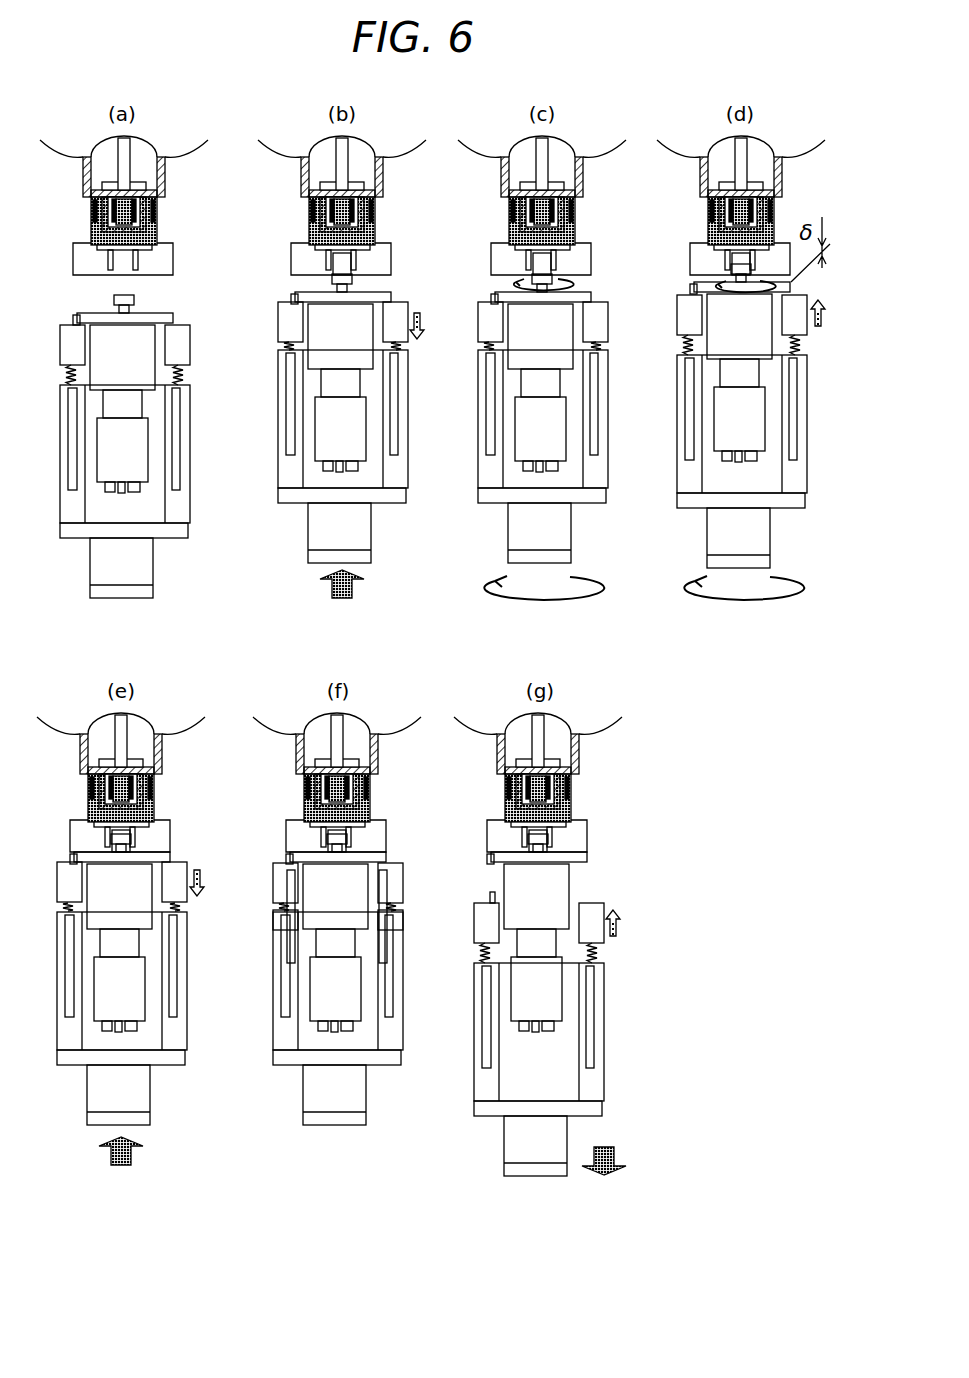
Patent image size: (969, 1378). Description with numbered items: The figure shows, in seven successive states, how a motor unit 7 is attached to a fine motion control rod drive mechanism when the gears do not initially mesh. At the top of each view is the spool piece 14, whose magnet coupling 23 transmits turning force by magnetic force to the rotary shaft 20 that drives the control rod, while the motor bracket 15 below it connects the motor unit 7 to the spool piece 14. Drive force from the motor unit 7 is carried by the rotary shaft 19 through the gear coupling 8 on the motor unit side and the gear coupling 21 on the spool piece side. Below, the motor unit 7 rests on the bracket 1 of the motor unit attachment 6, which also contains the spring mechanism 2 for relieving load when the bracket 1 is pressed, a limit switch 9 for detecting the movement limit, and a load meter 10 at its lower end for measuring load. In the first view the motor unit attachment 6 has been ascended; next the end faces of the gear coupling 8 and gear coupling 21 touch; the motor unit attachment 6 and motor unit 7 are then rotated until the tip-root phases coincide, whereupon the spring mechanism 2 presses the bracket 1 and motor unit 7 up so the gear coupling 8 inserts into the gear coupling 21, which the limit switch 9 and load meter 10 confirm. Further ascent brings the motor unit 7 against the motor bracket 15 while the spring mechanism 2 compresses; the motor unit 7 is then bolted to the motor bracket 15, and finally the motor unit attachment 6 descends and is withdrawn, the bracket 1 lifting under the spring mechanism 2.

The bracket 1 is at (62, 335).
The spring mechanism 2 is at (66, 378).
The motor unit attachment 6 is at (410, 733).
The motor unit 7 is at (392, 669).
The gear coupling on the motor unit side 8 is at (448, 563).
The limit switch 9 is at (186, 380).
The load meter 10 is at (155, 591).
The spool piece 14 is at (457, 456).
The motor bracket 15 is at (430, 541).
The rotary shaft 19 is at (130, 312).
The rotary shaft 20 is at (108, 151).
The gear coupling on the spool piece side 21 is at (391, 547).
The magnet coupling 23 is at (400, 511).